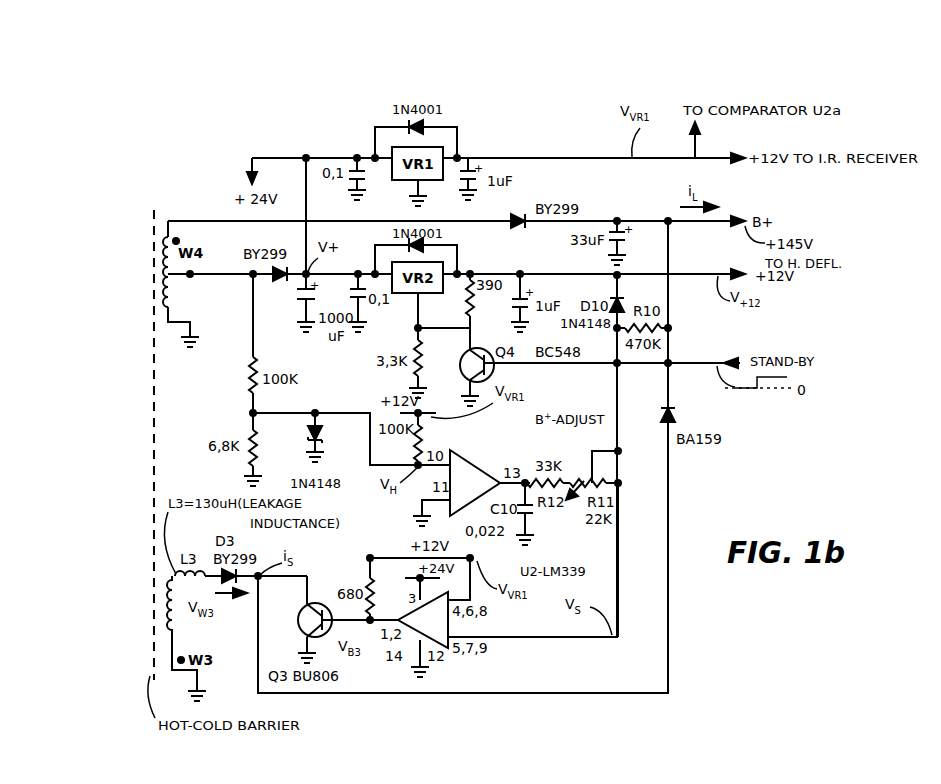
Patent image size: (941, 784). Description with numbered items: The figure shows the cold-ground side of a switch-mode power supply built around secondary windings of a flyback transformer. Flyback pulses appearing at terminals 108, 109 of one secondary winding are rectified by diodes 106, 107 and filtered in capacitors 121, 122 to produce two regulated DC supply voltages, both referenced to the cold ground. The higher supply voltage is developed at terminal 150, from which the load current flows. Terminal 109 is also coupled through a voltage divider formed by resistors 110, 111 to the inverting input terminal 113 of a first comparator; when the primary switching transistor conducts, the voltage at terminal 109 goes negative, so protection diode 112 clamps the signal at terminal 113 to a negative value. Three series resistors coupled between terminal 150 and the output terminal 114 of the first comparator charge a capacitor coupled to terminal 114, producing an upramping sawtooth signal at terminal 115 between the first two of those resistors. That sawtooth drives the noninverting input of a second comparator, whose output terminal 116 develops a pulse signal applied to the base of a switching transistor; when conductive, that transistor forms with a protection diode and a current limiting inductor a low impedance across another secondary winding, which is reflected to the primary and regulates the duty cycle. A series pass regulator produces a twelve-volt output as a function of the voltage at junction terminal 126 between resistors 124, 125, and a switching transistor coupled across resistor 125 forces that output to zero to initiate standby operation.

The diode 106 is at (518, 217).
The diode 107 is at (281, 282).
The terminal of winding W4 108 is at (170, 220).
The terminal of winding W4 109 is at (192, 272).
The resistor 110 is at (250, 382).
The resistor 111 is at (258, 448).
The protection diode 112 is at (322, 438).
The inverting input terminal of comparator U2b 113 is at (455, 463).
The output terminal of comparator U2b 114 is at (505, 478).
The terminal between resistors R10 and R11 115 is at (620, 486).
The output terminal of comparator U2a 116 is at (400, 618).
The filter capacitor 121 is at (627, 240).
The filter capacitor 122 is at (312, 301).
The resistor 124 is at (467, 307).
The resistor 125 is at (422, 361).
The junction terminal 126 is at (418, 328).
The terminal 150 is at (617, 219).